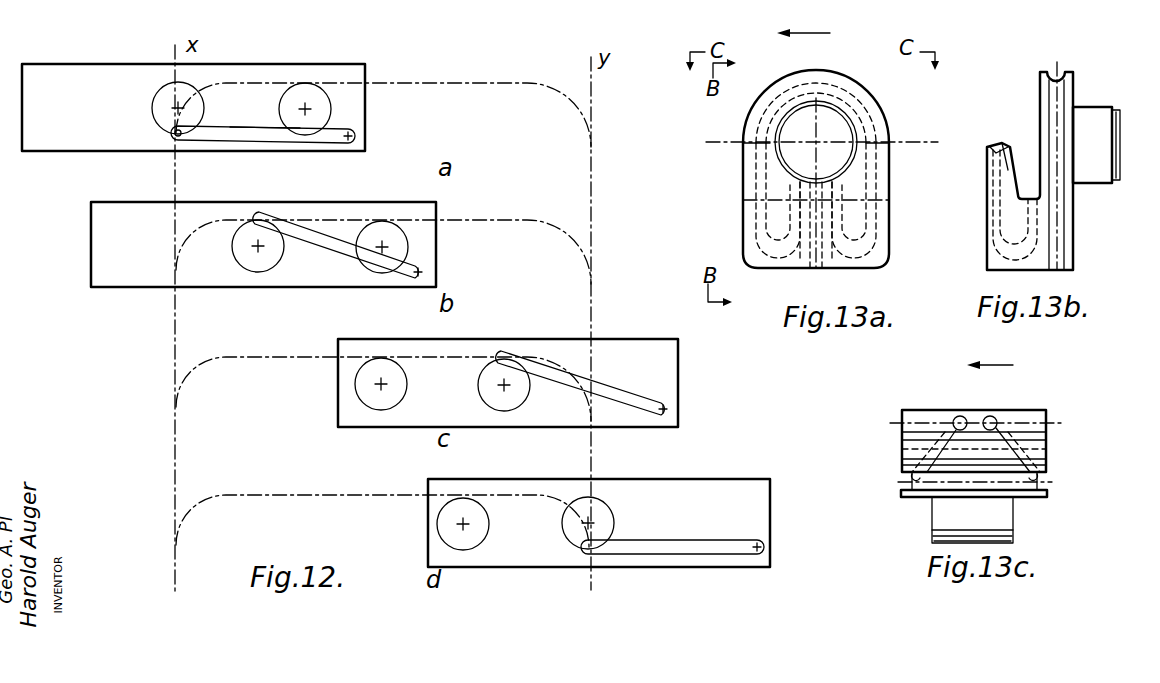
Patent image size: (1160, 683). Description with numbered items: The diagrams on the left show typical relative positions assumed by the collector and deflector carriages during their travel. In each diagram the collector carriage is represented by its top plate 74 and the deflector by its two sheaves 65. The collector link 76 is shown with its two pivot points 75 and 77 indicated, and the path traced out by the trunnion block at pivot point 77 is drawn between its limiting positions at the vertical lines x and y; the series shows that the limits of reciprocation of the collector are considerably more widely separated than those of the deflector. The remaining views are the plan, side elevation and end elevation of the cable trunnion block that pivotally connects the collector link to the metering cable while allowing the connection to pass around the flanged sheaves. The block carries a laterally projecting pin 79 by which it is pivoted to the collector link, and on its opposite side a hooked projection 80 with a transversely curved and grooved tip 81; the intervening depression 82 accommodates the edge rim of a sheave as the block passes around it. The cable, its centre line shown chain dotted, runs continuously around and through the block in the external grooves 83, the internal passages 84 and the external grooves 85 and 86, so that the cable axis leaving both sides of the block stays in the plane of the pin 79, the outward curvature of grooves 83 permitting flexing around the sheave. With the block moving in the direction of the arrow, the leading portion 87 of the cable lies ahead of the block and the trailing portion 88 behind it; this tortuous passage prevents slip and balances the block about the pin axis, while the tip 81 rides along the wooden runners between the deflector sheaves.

In FIG. 12, the sheaves 65 is at (287, 93).
In FIG. 12, the top plate 74 is at (350, 110).
In FIG. 12, the pivot point 75 is at (355, 138).
In FIG. 12, the collector link 76 is at (267, 137).
In FIG. 12, the pivot point 77 is at (184, 140).
In FIG. 13A, the pin 79 is at (862, 112).
In FIG. 13B, the pin 79 is at (1095, 168).
In FIG. 13C, the pin 79 is at (1003, 521).
In FIG. 13A, the hooked projection 80 is at (860, 226).
In FIG. 13B, the hooked projection 80 is at (987, 237).
In FIG. 13C, the hooked projection 80 is at (1054, 430).
In FIG. 13A, the tip 81 is at (834, 141).
In FIG. 13B, the tip 81 is at (1004, 136).
In FIG. 13C, the tip 81 is at (978, 416).
In FIG. 13A, the depression 82 is at (889, 176).
In FIG. 13B, the depression 82 is at (1018, 174).
In FIG. 13C, the depression 82 is at (1035, 455).
In FIG. 13A, the external grooves 83 is at (756, 143).
In FIG. 13B, the external grooves 83 is at (995, 155).
In FIG. 13C, the external grooves 83 is at (930, 420).
In FIG. 13A, the internal passages 84 is at (804, 250).
In FIG. 13B, the internal passages 84 is at (995, 218).
In FIG. 13C, the internal passages 84 is at (915, 443).
In FIG. 13A, the external grooves 85 is at (746, 184).
In FIG. 13B, the external grooves 85 is at (1060, 217).
In FIG. 13C, the external grooves 85 is at (910, 483).
In FIG. 13A, the external grooves 86 is at (838, 84).
In FIG. 13B, the external grooves 86 is at (1057, 88).
In FIG. 13C, the external grooves 86 is at (965, 484).
In FIG. 13A, the leading portion of the cable 87 is at (722, 142).
In FIG. 13C, the leading portion of the cable 87 is at (893, 423).
In FIG. 13A, the trailing portion of the cable 88 is at (920, 150).
In FIG. 13C, the trailing portion of the cable 88 is at (1063, 423).